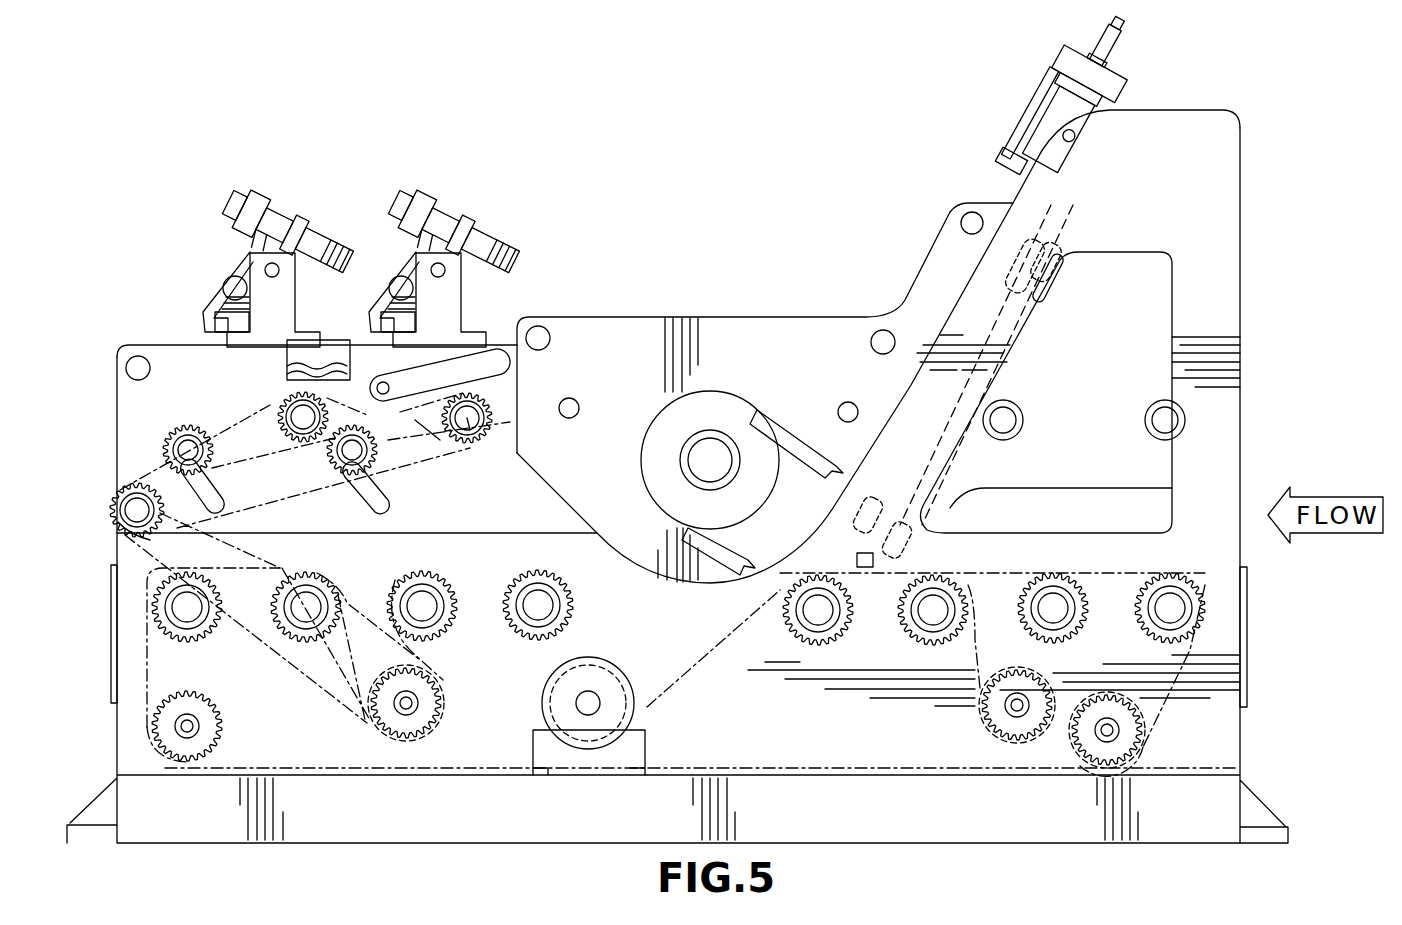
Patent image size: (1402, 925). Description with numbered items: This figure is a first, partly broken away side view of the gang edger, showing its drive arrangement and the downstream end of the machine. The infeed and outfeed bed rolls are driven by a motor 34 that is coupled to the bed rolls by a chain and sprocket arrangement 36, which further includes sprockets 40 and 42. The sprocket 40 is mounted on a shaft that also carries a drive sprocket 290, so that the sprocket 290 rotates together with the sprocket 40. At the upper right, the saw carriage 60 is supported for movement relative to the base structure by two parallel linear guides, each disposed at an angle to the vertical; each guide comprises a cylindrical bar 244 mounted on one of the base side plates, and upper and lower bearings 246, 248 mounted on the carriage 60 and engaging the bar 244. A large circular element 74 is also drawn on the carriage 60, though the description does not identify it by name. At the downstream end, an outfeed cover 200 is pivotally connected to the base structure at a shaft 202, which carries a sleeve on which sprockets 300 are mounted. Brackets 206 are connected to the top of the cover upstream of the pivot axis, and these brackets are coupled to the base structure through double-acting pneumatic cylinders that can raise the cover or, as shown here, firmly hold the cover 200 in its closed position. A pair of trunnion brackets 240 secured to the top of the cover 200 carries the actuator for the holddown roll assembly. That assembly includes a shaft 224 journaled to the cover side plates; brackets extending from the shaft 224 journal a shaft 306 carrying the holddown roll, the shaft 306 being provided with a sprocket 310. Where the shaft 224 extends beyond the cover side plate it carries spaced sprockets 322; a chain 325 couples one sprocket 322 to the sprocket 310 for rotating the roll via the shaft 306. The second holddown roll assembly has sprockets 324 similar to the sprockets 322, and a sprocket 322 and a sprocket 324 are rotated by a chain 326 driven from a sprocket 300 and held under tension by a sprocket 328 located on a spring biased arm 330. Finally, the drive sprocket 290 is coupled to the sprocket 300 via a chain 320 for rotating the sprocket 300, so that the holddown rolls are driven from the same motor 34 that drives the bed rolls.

The motor 34 is at (617, 665).
The chain and sprocket arrangement 36 is at (136, 717).
The sprocket 40 is at (445, 703).
The sprocket 42 is at (985, 718).
The saw carriage 60 is at (752, 310).
The roller 74 is at (758, 400).
The outfeed cover 200 is at (163, 345).
The shaft 202 is at (125, 500).
The brackets 206 is at (330, 335).
The shaft 224 is at (470, 422).
The trunnion brackets 240 is at (478, 335).
The cylindrical bar 244 is at (1076, 212).
The upper bearing 246 is at (1000, 258).
The lower bearing 248 is at (855, 517).
The drive sprocket 290 is at (380, 722).
The sprocket 300 is at (130, 543).
The shaft 306 is at (345, 470).
The sprocket 310 is at (385, 510).
The chain 320 is at (262, 548).
The sprockets 322 is at (497, 432).
The sprockets 324 is at (293, 425).
The chain 325 is at (422, 430).
The chain 326 is at (160, 448).
The sprocket 328 is at (292, 368).
The spring biased arm 330 is at (500, 374).